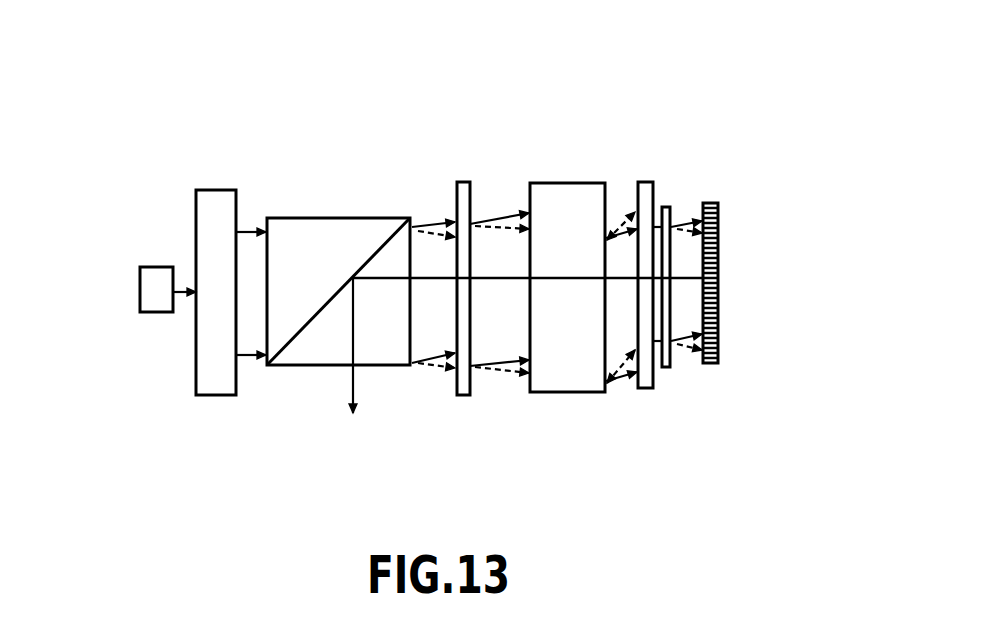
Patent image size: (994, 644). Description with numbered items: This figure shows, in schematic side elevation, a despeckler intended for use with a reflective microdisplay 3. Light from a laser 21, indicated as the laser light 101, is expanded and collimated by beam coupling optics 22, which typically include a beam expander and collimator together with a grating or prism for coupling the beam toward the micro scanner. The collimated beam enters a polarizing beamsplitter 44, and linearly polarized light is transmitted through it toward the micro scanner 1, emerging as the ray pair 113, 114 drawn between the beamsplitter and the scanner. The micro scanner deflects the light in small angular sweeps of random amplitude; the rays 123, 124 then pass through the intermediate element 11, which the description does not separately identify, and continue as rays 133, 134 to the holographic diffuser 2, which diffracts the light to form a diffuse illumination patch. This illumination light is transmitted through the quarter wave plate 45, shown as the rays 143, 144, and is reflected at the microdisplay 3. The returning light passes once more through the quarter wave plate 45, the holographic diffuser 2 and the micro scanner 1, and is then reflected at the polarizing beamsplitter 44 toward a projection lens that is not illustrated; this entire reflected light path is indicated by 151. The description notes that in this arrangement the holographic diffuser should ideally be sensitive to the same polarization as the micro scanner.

The laser 21 is at (172, 315).
The light from the laser 101 is at (210, 186).
The beam coupling optics 22 is at (216, 188).
The polarizing beamsplitter 44 is at (313, 218).
The reflected light path 151 is at (348, 387).
The first polarized light beam 113 is at (462, 193).
The second polarized light beam 114 is at (465, 218).
The micro scanner 1 is at (460, 397).
The first light beam after retardation plate 123 is at (528, 215).
The second light beam after retardation plate 124 is at (531, 240).
The lens 11 is at (575, 393).
The first light beam after lens 133 is at (659, 222).
The second light beam after lens 134 is at (659, 243).
The holographic diffuser 2 is at (652, 388).
The quarter wave plate 45 is at (628, 346).
The first light beam toward scale 143 is at (723, 234).
The second light beam toward scale 144 is at (726, 260).
The microdisplay 3 is at (712, 367).